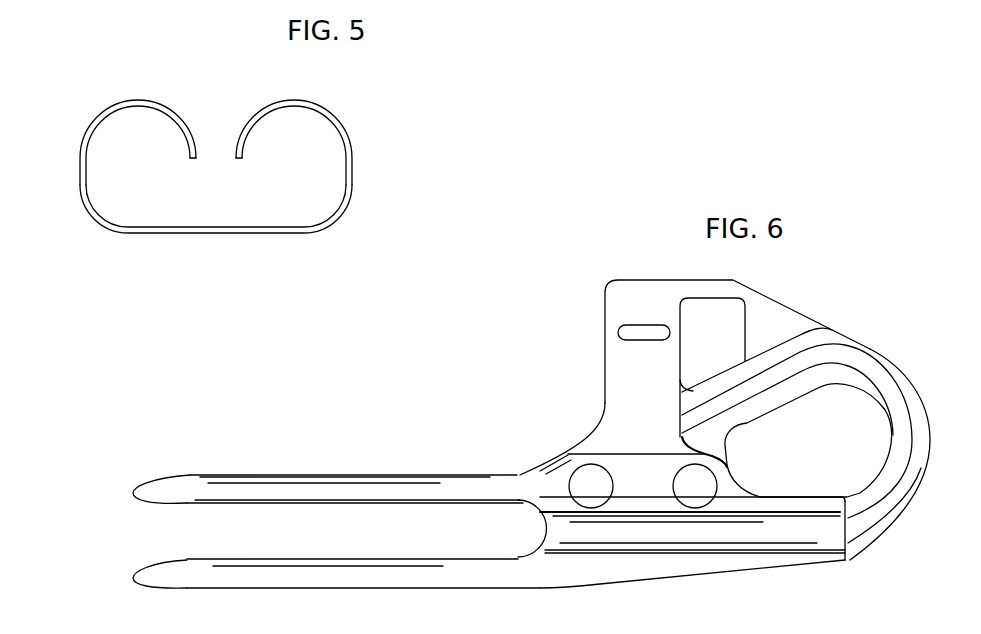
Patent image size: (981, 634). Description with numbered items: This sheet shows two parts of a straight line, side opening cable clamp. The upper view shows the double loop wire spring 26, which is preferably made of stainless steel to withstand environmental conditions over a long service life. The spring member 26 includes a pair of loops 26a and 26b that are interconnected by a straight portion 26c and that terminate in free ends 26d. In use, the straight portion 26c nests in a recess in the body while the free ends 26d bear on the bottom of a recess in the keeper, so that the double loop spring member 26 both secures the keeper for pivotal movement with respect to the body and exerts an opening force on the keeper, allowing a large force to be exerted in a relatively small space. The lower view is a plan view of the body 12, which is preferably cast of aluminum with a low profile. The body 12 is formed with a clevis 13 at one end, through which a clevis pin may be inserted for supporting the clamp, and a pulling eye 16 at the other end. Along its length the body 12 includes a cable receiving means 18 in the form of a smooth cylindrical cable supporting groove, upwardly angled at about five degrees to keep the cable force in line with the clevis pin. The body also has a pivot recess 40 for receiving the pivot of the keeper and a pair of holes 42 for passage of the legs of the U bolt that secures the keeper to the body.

In FIG. 6, the body 12 is at (513, 474).
In FIG. 6, the clevis 13 is at (177, 559).
In FIG. 6, the pulling eye 16 is at (890, 456).
In FIG. 6, the cable receiving means 18 is at (837, 537).
In FIG. 5, the double loop wire spring 26 is at (228, 98).
In FIG. 5, the loop 26a is at (95, 120).
In FIG. 5, the loop 26b is at (345, 120).
In FIG. 5, the straight portion 26c is at (192, 225).
In FIG. 5, the free ends 26d is at (195, 160).
In FIG. 6, the pivot recess 40 is at (618, 333).
In FIG. 6, the holes 42 is at (673, 483).